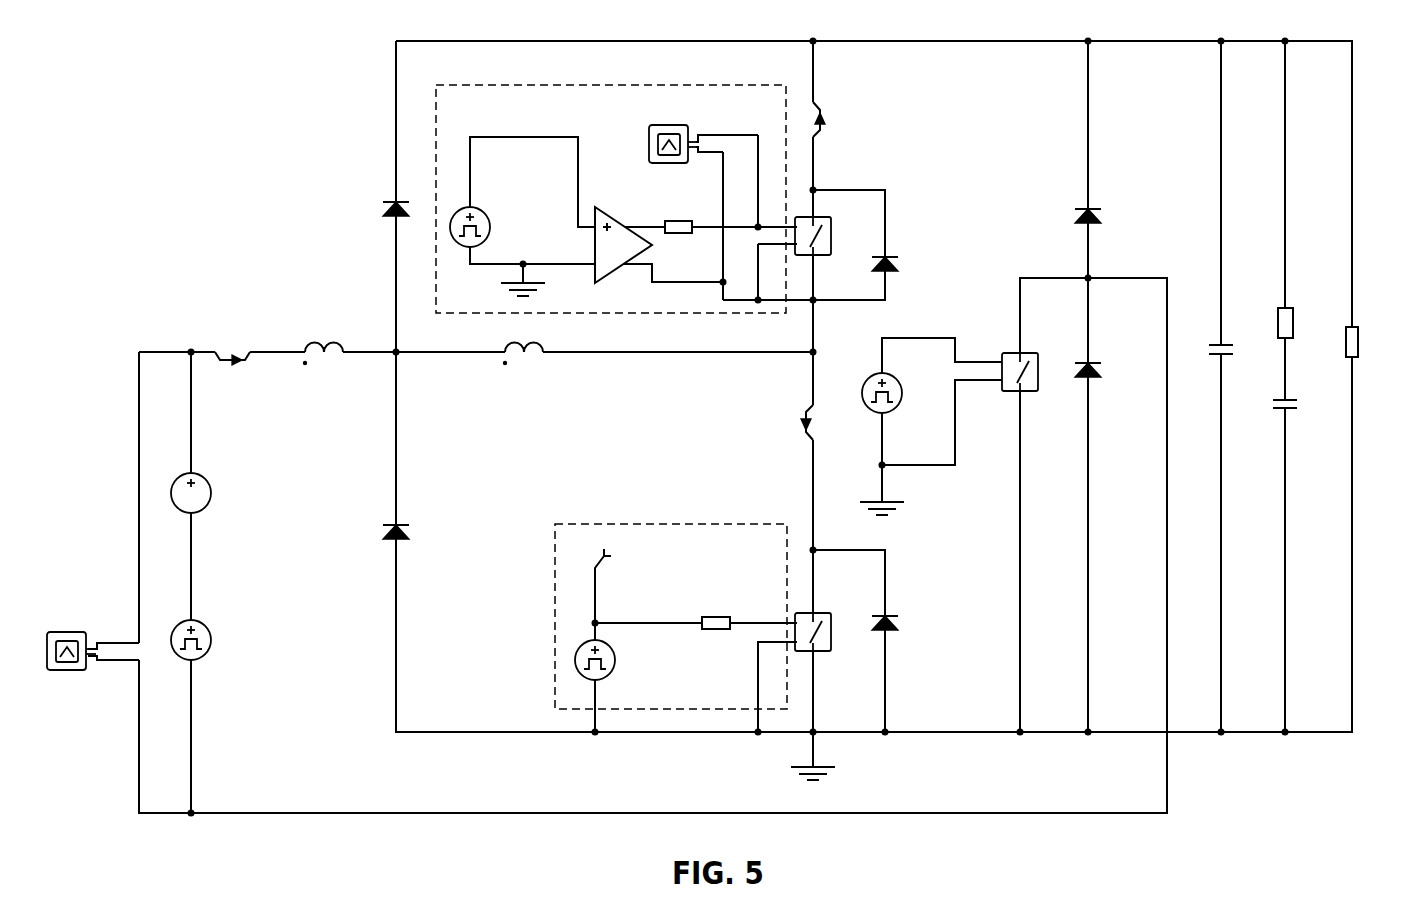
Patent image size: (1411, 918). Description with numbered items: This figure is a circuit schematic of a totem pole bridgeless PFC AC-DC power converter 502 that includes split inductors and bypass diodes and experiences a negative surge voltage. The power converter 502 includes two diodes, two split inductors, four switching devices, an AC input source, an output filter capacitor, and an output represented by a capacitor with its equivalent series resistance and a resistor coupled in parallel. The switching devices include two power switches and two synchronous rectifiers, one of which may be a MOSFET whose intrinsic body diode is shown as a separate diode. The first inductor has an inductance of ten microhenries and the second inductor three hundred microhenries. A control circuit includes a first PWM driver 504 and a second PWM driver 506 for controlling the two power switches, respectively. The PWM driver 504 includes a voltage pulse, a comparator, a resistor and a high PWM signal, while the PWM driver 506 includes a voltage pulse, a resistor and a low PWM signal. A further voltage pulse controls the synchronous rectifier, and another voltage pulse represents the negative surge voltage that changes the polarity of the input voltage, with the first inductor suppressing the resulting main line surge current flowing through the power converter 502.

The totem pole bridgeless PFC AC-DC power converter 502 is at (263, 184).
The PWM driver 504 is at (511, 84).
The PWM driver 506 is at (630, 524).